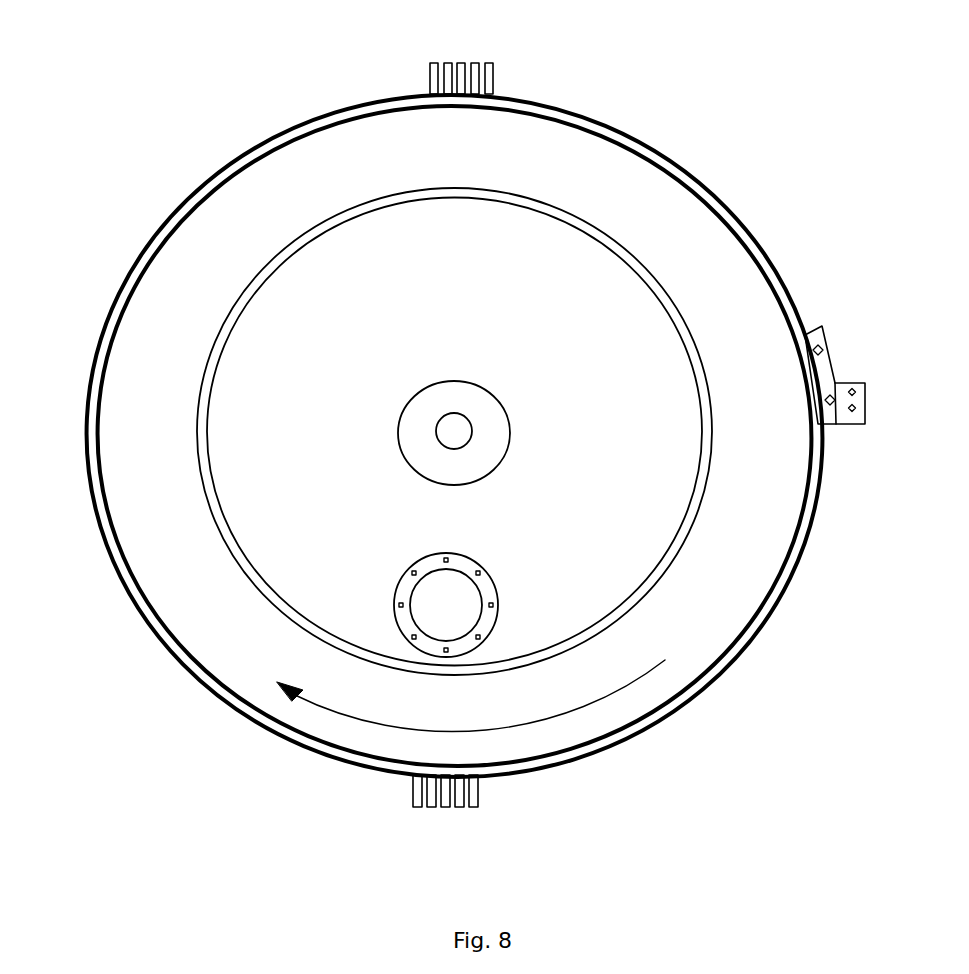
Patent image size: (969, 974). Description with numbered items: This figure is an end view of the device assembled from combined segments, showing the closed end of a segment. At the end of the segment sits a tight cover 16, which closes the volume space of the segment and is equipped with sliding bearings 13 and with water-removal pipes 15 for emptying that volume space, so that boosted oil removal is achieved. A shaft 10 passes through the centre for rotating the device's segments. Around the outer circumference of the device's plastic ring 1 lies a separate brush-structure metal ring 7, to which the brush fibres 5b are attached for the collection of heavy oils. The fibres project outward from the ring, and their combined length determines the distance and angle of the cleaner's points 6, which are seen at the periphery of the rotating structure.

The plastic ring 1 is at (250, 228).
The brush fibres 5b is at (490, 72).
The cleaner's points 6 is at (828, 362).
The brush-structure metal ring 7 is at (688, 183).
The shaft 10 is at (457, 433).
The sliding bearings 13 is at (700, 297).
The water-removal pipes 15 is at (495, 610).
The tight cover 16 is at (258, 402).